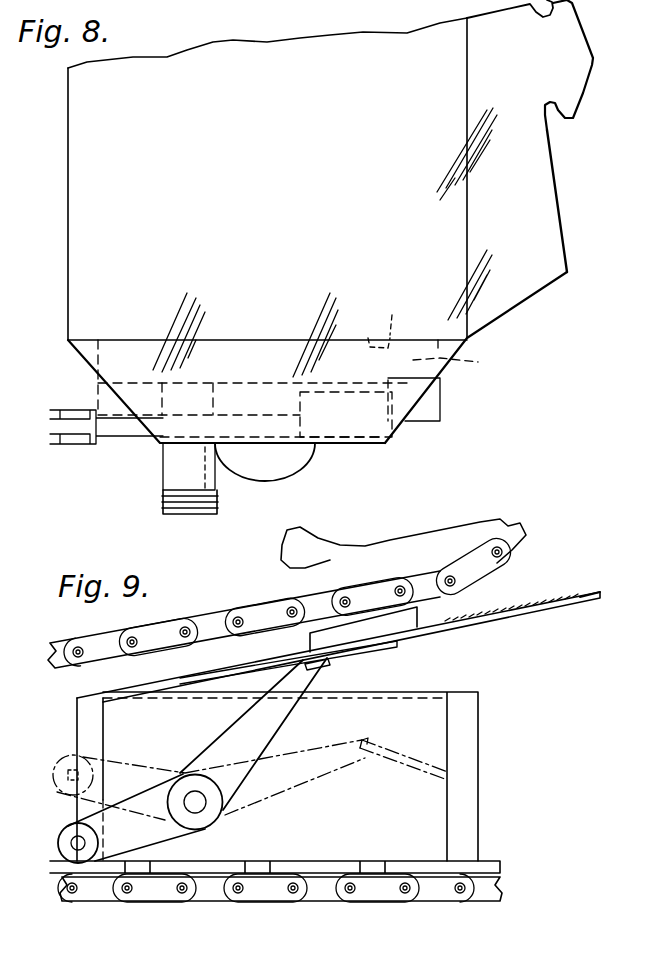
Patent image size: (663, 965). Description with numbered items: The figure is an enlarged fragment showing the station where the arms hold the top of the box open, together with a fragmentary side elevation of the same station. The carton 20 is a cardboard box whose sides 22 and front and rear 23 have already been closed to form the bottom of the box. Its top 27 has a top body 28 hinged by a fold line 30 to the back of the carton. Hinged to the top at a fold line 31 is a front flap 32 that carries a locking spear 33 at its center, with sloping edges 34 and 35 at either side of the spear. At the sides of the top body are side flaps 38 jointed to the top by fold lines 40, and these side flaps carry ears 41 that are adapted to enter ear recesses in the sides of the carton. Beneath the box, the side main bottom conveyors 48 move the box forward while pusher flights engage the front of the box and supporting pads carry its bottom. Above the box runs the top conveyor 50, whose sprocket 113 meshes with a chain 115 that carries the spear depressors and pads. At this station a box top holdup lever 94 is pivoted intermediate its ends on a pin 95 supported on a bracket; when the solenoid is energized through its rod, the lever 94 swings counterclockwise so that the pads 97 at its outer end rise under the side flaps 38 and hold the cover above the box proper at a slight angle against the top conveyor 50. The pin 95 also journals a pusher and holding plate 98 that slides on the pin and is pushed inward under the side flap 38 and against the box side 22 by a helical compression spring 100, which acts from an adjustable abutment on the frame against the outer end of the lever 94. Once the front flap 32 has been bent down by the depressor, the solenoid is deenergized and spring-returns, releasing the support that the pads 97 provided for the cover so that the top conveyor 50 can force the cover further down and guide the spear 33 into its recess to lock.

In FIG. 8, the carton 20 is at (268, 149).
In FIG. 8, the sides 22 is at (385, 320).
In FIG. 9, the sides 22 is at (354, 824).
In FIG. 9, the front and rear 23 is at (77, 738).
In FIG. 8, the top 27 is at (278, 227).
In FIG. 9, the top 27 is at (457, 626).
In FIG. 8, the top body 28 is at (384, 143).
In FIG. 8, the fold line 30 is at (68, 179).
In FIG. 8, the fold line 31 is at (468, 203).
In FIG. 8, the front flap 32 is at (409, 303).
In FIG. 9, the front flap 32 is at (543, 611).
In FIG. 8, the locking spear 33 is at (568, 65).
In FIG. 9, the locking spear 33 is at (589, 604).
In FIG. 8, the sloping edge 34 is at (557, 174).
In FIG. 8, the sloping edge 35 is at (510, 20).
In FIG. 8, the side flaps 38 is at (270, 390).
In FIG. 8, the fold lines 40 is at (217, 339).
In FIG. 8, the ears 41 is at (263, 468).
In FIG. 9, the side main bottom conveyors 48 is at (253, 906).
In FIG. 9, the top conveyor 50 is at (265, 603).
In FIG. 8, the box top holdup lever 94 is at (177, 465).
In FIG. 9, the box top holdup lever 94 is at (195, 773).
In FIG. 9, the pin 95 is at (198, 803).
In FIG. 8, the pads 97 is at (459, 358).
In FIG. 9, the pads 97 is at (385, 651).
In FIG. 8, the pusher and holding plate 98 is at (427, 411).
In FIG. 9, the pusher and holding plate 98 is at (440, 825).
In FIG. 8, the helical compression spring 100 is at (163, 503).
In FIG. 9, the sprocket 113 is at (470, 532).
In FIG. 9, the chain 115 is at (489, 572).